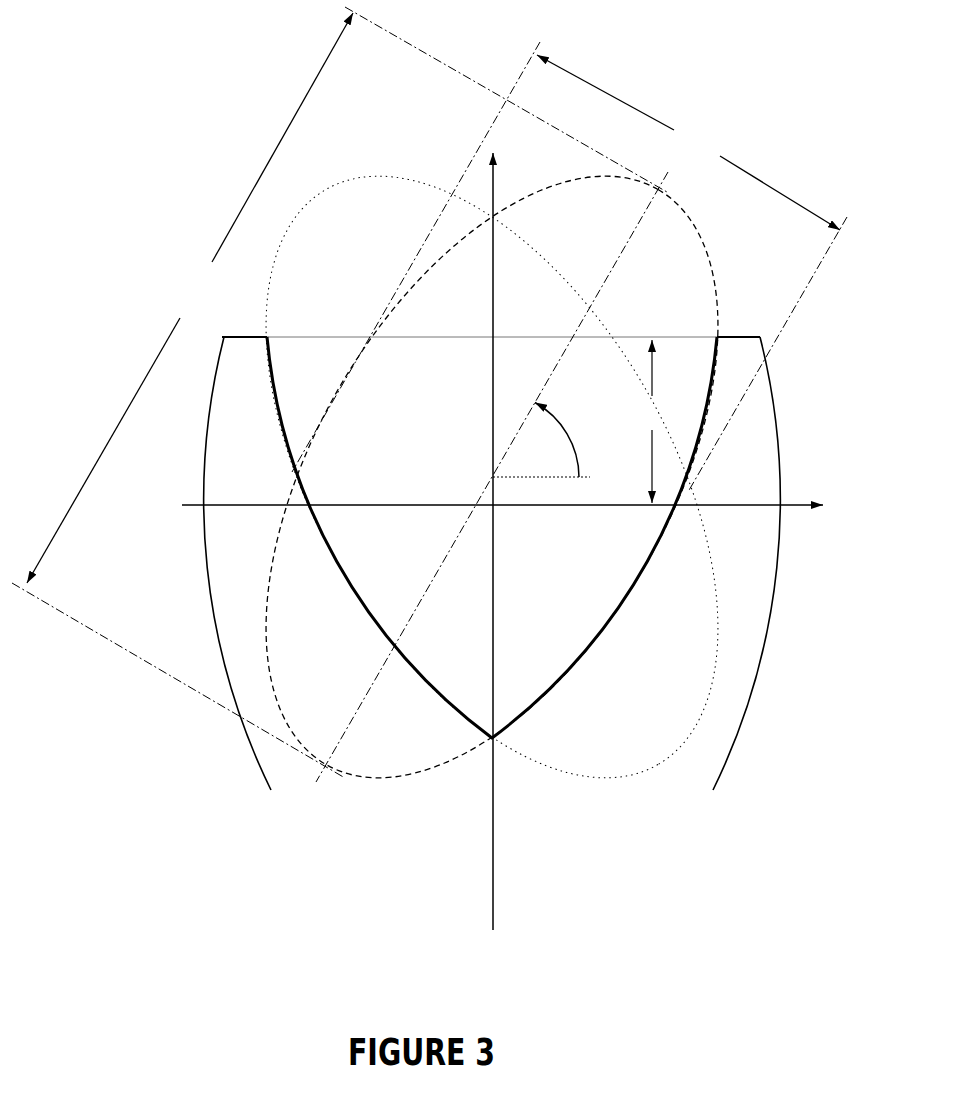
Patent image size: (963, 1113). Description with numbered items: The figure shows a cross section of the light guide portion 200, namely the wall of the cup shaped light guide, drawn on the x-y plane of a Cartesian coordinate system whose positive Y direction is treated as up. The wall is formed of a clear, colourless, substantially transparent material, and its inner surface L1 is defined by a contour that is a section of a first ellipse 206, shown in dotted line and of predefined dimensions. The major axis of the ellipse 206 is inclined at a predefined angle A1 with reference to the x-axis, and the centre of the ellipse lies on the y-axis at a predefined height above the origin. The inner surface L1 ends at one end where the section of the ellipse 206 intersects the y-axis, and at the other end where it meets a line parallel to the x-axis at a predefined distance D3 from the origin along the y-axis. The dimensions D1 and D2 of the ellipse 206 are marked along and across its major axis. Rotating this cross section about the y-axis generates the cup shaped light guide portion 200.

The gear tooth profile diagram 200 is at (451, 508).
The first ellipse 206 is at (717, 293).
The inner surface L1 is at (492, 537).
The predefined angle A1 is at (541, 440).
The major diameter of tool envelope D1 is at (340, 394).
The minor diameter of tool envelope D2 is at (569, 267).
The predefined distance D3 is at (653, 421).